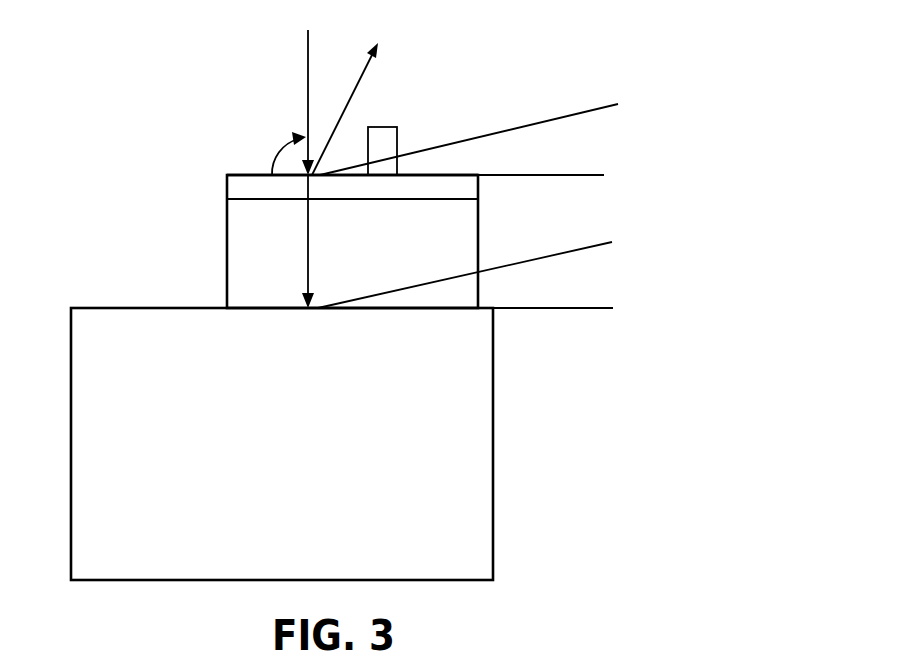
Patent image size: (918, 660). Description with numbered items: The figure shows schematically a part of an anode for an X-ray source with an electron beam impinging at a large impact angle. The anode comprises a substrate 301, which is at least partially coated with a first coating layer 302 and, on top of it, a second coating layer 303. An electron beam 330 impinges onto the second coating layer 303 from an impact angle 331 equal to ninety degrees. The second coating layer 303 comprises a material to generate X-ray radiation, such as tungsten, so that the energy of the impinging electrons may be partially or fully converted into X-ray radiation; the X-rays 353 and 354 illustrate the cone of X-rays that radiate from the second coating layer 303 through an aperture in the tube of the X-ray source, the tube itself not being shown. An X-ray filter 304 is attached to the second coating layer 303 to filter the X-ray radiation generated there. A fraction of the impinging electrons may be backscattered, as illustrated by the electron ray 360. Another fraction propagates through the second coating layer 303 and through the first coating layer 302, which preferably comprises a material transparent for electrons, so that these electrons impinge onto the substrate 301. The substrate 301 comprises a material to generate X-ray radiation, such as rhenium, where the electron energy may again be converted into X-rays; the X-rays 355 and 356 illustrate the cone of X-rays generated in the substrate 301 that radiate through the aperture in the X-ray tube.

The substrate 301 is at (493, 432).
The first coating layer 302 is at (227, 260).
The second coating layer 303 is at (227, 185).
The X-ray filter 304 is at (398, 140).
The electron beam 330 is at (307, 71).
The impact angle 331 is at (283, 149).
The X-rays 353 is at (583, 175).
The X-rays 354 is at (573, 111).
The X-rays 355 is at (577, 308).
The X-rays 356 is at (590, 244).
The electron ray 360 is at (365, 72).